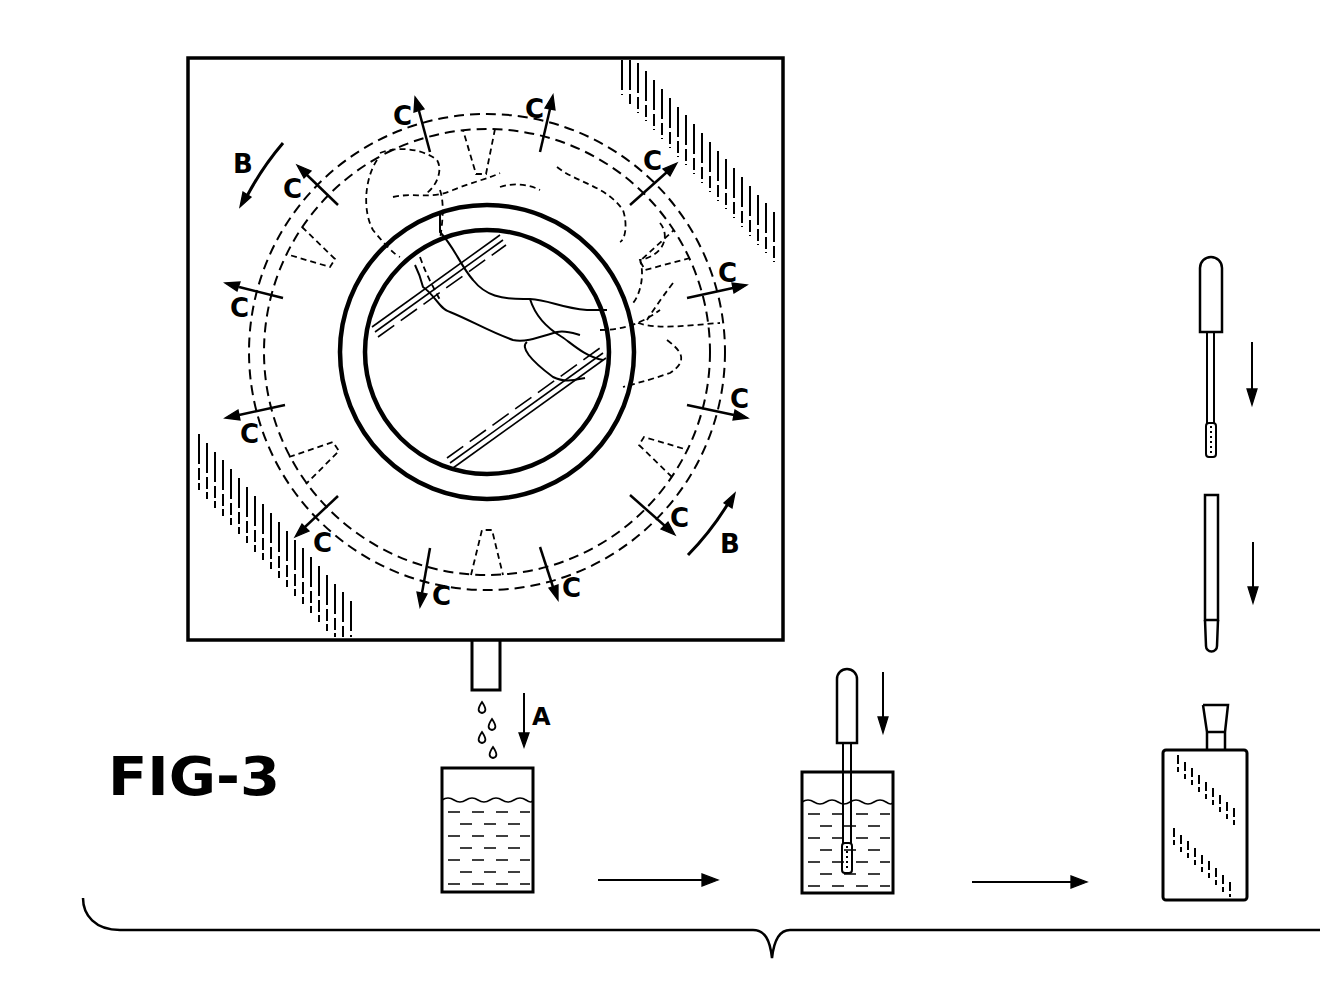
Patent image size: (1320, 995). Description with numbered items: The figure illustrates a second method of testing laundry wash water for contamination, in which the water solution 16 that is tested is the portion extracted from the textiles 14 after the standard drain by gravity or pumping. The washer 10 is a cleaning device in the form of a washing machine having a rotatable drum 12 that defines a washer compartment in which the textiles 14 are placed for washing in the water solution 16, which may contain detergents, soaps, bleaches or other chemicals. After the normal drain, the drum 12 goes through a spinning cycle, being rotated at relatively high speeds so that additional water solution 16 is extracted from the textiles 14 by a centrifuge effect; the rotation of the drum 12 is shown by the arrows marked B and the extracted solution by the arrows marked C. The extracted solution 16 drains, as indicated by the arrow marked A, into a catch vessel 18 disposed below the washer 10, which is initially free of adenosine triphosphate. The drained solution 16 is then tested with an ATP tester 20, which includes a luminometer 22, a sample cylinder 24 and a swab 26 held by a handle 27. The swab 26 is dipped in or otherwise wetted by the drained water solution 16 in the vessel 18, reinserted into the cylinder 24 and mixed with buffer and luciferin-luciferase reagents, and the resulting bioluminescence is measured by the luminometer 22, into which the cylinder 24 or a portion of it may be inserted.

The washer 10 is at (792, 147).
The rotatable drum 12 is at (727, 330).
The textiles 14 is at (463, 313).
The water solution 16 is at (478, 738).
The catch vessel 18 is at (533, 838).
The ATP tester 20 is at (1142, 802).
The luminometer 22 is at (1163, 797).
The sample cylinder 24 is at (1205, 555).
The swab 26 is at (1206, 440).
The handle 27 is at (1200, 300).